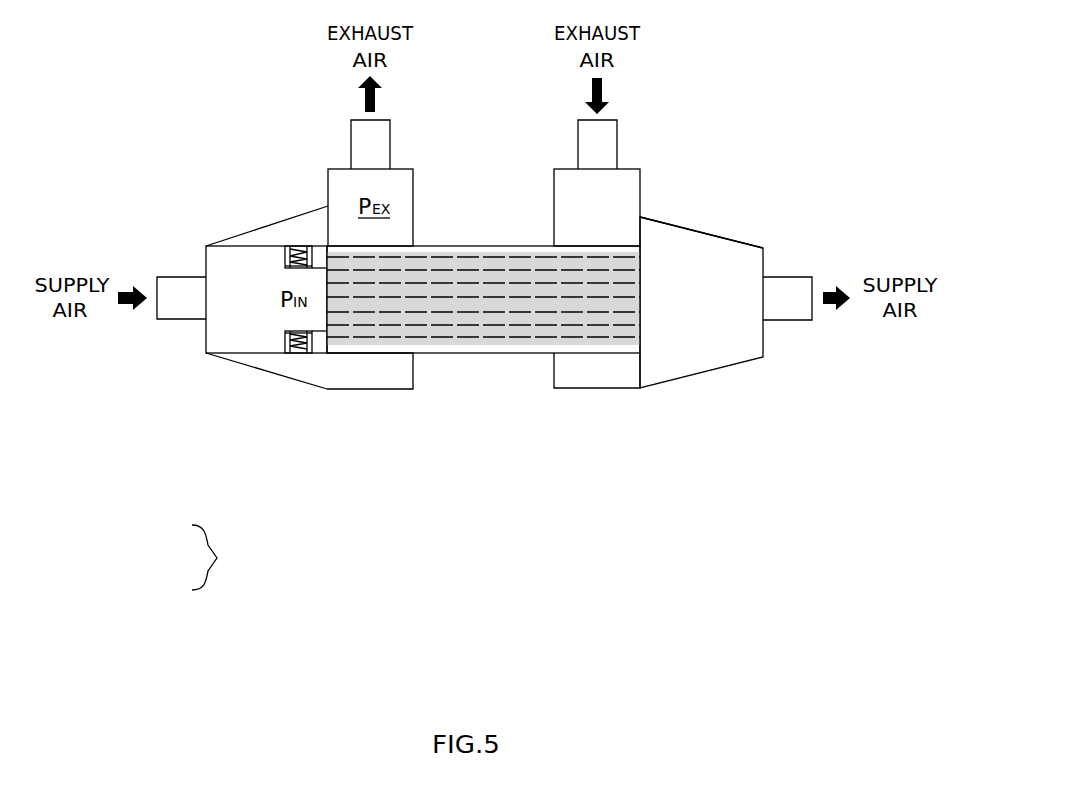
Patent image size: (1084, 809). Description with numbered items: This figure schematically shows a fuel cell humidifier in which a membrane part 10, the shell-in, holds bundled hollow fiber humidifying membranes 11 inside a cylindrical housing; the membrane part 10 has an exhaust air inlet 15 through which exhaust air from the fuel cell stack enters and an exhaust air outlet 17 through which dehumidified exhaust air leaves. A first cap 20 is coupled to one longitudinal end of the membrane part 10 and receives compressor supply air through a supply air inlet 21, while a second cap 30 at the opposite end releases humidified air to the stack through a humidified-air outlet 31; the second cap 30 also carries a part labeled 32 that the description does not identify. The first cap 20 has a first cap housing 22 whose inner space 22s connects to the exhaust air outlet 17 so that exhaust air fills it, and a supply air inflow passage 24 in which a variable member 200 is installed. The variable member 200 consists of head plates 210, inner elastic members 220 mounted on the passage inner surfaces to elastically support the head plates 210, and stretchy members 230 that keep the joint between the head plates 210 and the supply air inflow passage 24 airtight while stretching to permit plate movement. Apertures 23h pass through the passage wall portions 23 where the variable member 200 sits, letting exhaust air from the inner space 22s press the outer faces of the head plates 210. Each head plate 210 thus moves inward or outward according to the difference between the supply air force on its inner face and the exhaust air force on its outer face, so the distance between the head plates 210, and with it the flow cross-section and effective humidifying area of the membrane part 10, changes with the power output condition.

The membrane part 10 is at (485, 378).
The humidifying membranes 11 is at (483, 250).
The exhaust air inlet 15 is at (607, 133).
The exhaust air outlet 17 is at (383, 133).
The first cap 20 is at (286, 395).
The supply air inlet 21 is at (172, 320).
The first cap housing 22 is at (257, 372).
The inner space 22s is at (386, 374).
The portion of supply air inflow passage 23 is at (228, 244).
The apertures 23h is at (307, 246).
The supply air inflow passage 24 is at (229, 311).
The second cap 30 is at (705, 392).
The humidified-air outlet 31 is at (787, 285).
The outlet housing inclined wall 32 is at (707, 232).
The variable member 200 is at (204, 558).
The head plates 210 is at (285, 267).
The inner elastic members 220 is at (298, 252).
The stretchy members 230 is at (286, 255).